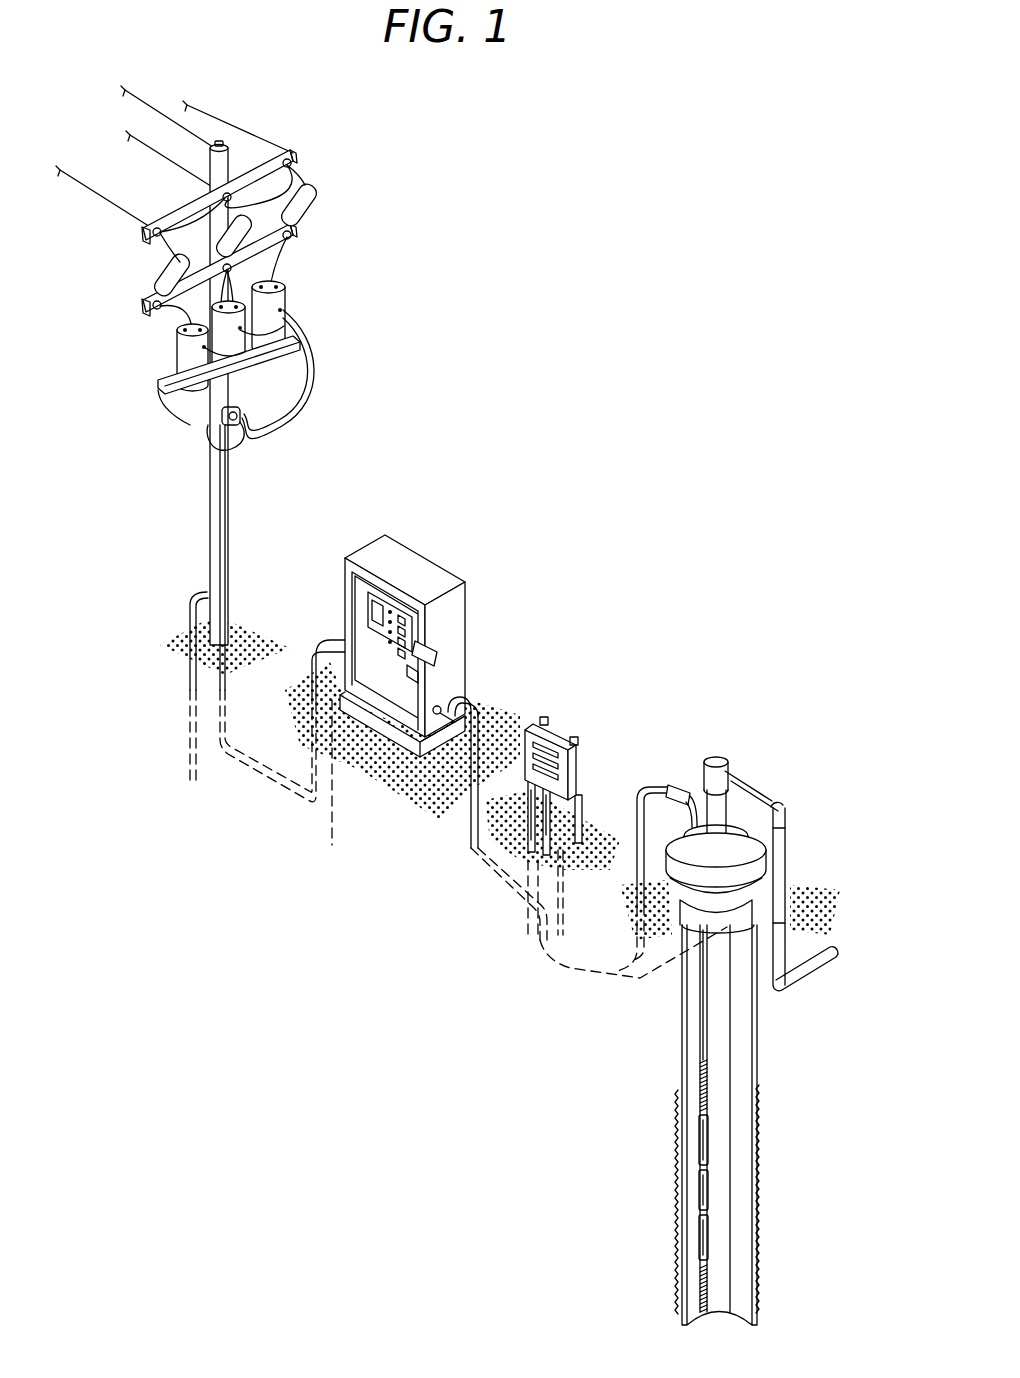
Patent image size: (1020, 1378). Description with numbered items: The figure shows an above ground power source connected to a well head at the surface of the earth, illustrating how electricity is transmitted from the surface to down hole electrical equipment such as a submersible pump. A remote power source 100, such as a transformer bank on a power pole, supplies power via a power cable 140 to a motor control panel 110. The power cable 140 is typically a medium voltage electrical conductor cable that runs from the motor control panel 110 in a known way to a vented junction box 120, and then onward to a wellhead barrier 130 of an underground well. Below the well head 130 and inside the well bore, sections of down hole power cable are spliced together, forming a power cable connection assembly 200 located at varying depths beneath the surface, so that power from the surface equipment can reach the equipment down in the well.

The remote power source 100 is at (298, 290).
The motor control panel 110 is at (437, 542).
The vented junction box 120 is at (573, 723).
The wellhead barrier 130 is at (778, 857).
The power cable 140 is at (248, 769).
The power cable connection assembly 200 is at (697, 1150).